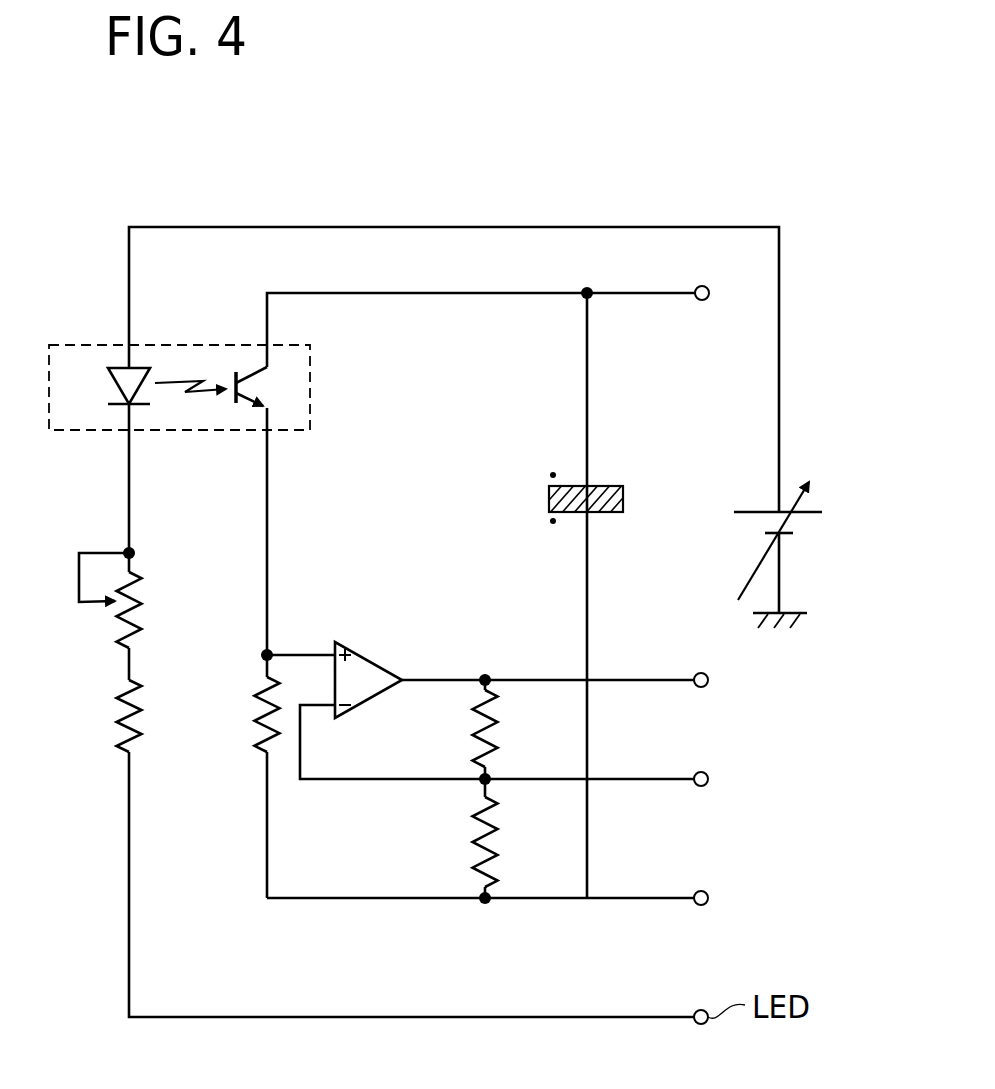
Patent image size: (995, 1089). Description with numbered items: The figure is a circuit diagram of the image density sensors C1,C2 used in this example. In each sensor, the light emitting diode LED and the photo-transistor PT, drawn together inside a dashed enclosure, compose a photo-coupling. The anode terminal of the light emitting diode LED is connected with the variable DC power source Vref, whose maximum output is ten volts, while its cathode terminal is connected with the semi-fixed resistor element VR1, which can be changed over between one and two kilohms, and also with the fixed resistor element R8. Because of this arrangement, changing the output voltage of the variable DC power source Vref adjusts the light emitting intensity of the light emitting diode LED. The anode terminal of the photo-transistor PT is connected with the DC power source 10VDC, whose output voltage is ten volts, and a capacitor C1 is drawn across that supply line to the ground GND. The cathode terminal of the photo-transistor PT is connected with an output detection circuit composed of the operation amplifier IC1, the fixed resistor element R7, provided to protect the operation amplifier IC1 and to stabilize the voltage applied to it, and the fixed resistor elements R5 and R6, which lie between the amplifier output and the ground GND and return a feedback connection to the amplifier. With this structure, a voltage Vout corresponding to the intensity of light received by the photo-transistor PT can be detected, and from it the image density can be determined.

The light emitting diode LED is at (110, 385).
The photo-transistor PT is at (212, 358).
The image density sensors C1,C2 is at (72, 432).
The semi-fixed resistor element VR1 is at (143, 600).
The fixed resistor element R8 is at (106, 716).
The fixed resistor element R7 is at (246, 714).
The operation amplifier IC1 is at (358, 650).
The fixed resistor element R5 is at (462, 728).
The fixed resistor element R6 is at (462, 842).
The image density sensor C1 is at (617, 486).
The variable DC power source Vref is at (812, 555).
The DC power source 10VDC is at (702, 300).
The output voltage Vout is at (708, 682).
The ground GND is at (708, 900).